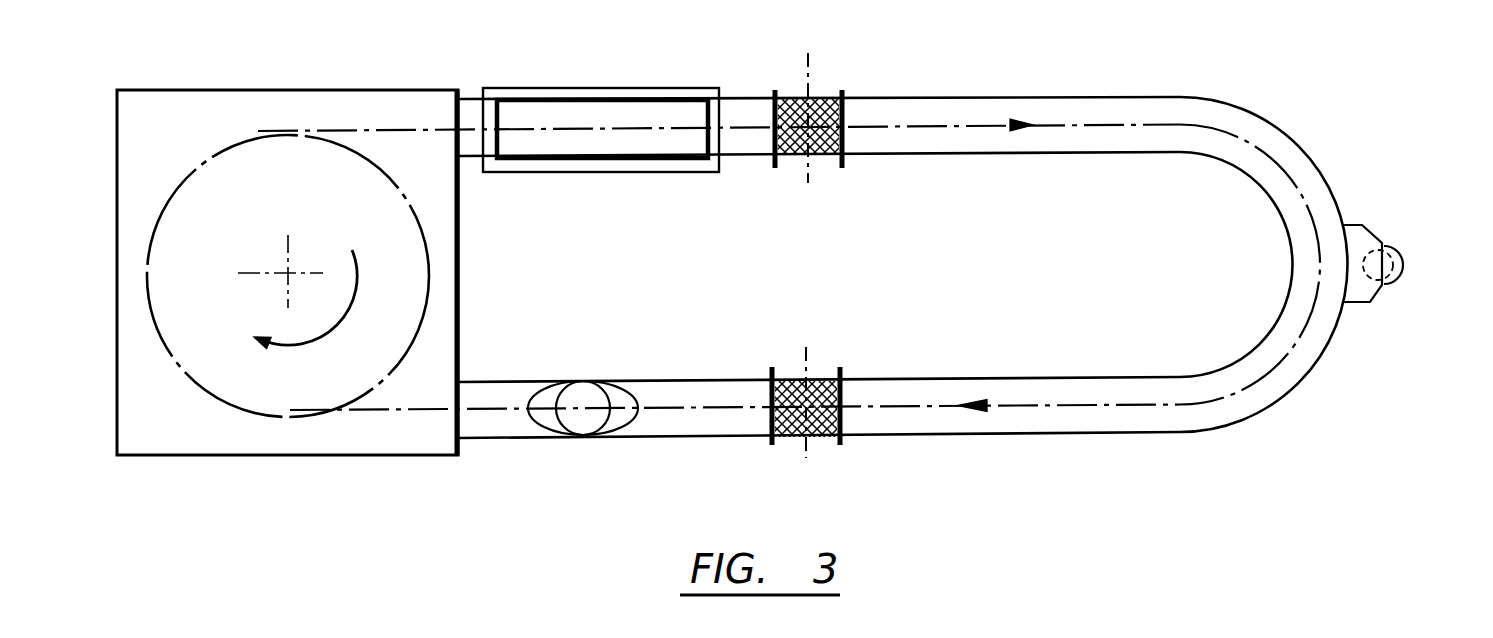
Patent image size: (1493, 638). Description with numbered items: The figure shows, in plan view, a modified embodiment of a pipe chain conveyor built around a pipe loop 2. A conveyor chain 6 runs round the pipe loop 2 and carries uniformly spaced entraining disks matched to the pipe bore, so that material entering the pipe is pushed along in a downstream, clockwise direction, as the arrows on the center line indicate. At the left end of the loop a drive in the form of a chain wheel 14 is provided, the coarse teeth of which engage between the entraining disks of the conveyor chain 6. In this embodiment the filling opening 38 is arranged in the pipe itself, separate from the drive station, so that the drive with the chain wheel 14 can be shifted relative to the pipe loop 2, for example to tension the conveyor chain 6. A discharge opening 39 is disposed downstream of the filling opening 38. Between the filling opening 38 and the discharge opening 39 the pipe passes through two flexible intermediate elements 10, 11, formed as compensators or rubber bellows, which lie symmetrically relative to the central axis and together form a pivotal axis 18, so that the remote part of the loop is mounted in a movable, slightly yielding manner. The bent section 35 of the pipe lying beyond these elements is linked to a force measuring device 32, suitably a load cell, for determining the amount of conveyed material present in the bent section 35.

The pipe loop 2 is at (914, 80).
The conveyor chain 6 is at (374, 131).
The chain wheel 14 is at (383, 163).
The filling opening 38 is at (570, 113).
The flexible intermediate element 10 is at (788, 98).
The flexible intermediate element 11 is at (788, 378).
The pivotal axis 18 is at (812, 78).
The bent section 35 is at (1275, 132).
The force measuring device 32 is at (1402, 243).
The discharge opening 39 is at (582, 420).